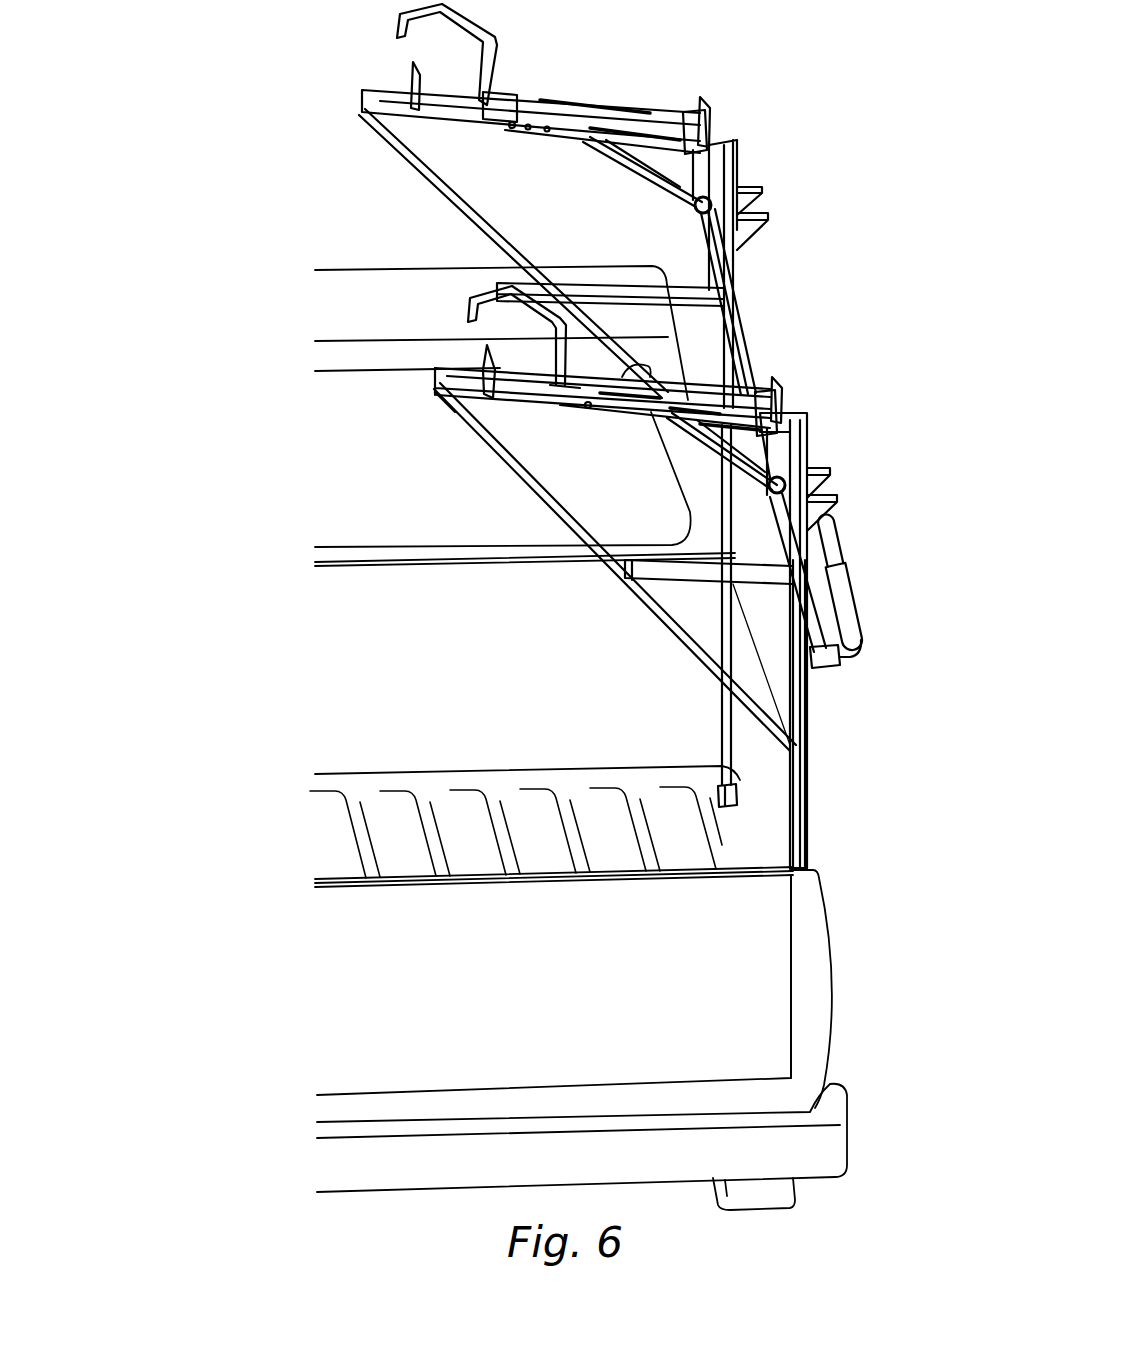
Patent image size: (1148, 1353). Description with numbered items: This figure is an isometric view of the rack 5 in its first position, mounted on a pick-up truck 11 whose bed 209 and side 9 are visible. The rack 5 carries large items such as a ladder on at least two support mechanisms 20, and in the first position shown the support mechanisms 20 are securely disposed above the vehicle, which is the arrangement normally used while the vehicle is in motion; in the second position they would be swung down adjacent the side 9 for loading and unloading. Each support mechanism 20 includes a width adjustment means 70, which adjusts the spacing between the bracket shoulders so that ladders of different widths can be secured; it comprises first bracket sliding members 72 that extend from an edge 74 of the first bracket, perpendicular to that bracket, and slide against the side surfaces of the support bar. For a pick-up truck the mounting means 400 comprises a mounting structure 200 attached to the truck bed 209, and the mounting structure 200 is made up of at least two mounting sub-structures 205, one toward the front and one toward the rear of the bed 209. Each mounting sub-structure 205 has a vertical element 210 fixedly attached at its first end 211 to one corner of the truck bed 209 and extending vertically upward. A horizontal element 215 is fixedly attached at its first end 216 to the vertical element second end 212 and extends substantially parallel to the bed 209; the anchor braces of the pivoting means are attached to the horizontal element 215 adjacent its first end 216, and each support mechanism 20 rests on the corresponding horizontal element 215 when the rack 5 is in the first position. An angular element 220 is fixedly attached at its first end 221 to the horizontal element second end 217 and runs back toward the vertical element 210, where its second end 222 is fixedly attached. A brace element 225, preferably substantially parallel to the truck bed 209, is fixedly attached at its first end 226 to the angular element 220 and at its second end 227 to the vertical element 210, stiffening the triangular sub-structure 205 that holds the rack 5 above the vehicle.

The rack 5 is at (772, 65).
The side of vehicle 9 is at (829, 914).
The truck 11 is at (530, 944).
The support mechanism 20 is at (645, 60).
The width adjustment means 70 is at (518, 152).
The first bracket sliding member 72 is at (455, 115).
The edge of first bracket 74 is at (457, 90).
The mounting structure 200 is at (852, 742).
The mounting sub-structure 205 is at (768, 248).
The truck bed 209 is at (562, 841).
The vertical element 210 is at (808, 790).
The vertical element first end 211 is at (724, 782).
The vertical element second end 212 is at (738, 165).
The horizontal element 215 is at (456, 377).
The horizontal element first end 216 is at (710, 143).
The horizontal element second end 217 is at (437, 384).
The angular element 220 is at (500, 466).
The angular element first end 221 is at (440, 400).
The angular element second end 222 is at (790, 762).
The brace element 225 is at (696, 570).
The brace element first end 226 is at (631, 570).
The brace element second end 227 is at (782, 565).
The mounting means 400 is at (880, 566).